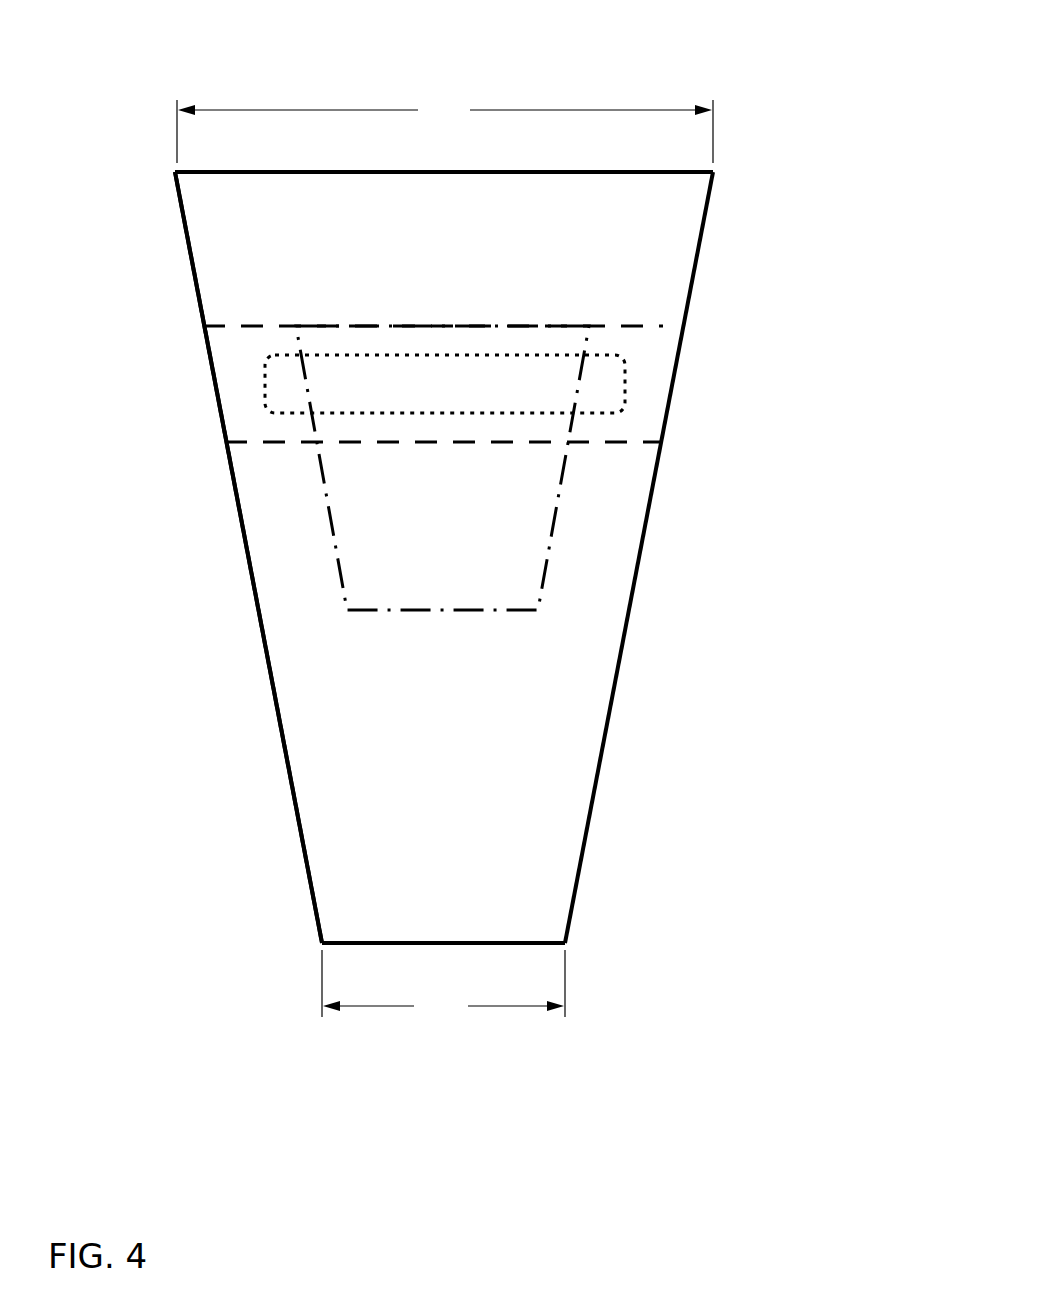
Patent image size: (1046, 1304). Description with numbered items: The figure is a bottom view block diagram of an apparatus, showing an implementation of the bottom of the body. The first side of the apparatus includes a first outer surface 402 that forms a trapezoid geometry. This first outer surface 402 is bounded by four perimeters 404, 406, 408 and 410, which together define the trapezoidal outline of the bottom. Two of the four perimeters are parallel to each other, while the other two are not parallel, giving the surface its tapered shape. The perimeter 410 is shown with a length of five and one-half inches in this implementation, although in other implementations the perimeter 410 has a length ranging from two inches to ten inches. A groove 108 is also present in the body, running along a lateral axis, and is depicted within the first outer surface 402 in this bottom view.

The groove 108 is at (620, 395).
The first outer surface 402 is at (216, 237).
The perimeter 404 is at (638, 580).
The perimeter 406 is at (385, 946).
The perimeter 408 is at (245, 545).
The perimeter 410 is at (525, 170).